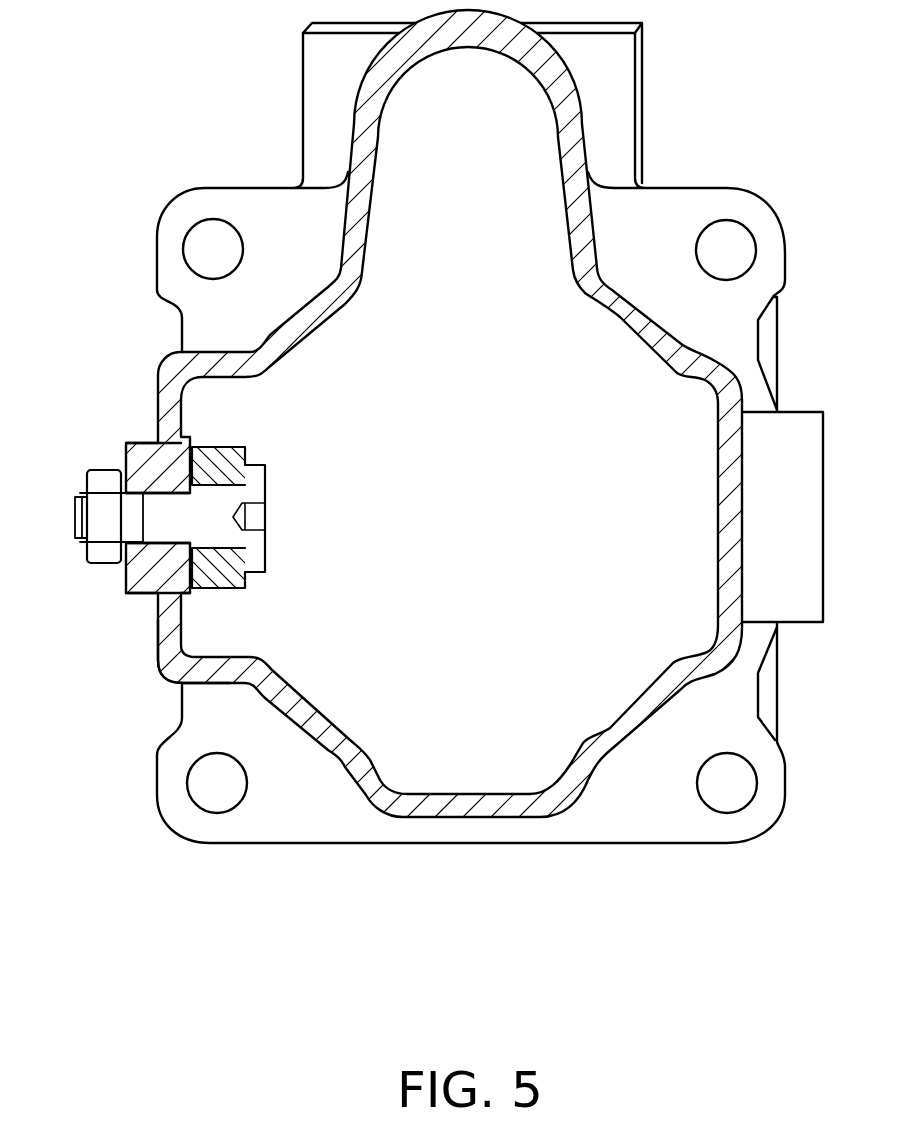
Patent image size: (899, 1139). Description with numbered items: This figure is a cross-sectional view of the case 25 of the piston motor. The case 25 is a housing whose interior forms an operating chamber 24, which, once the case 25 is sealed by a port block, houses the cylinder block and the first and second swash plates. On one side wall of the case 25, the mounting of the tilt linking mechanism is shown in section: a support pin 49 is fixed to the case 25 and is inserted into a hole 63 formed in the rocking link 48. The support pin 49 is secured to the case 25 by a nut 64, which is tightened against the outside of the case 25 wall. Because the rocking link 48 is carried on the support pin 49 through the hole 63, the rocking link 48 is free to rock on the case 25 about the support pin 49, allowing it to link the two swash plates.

The operating chamber 24 is at (427, 763).
The case 25 is at (158, 681).
The rocking link 48 is at (210, 580).
The support pin 49 is at (165, 503).
The hole 63 is at (153, 593).
The nut 64 is at (100, 560).